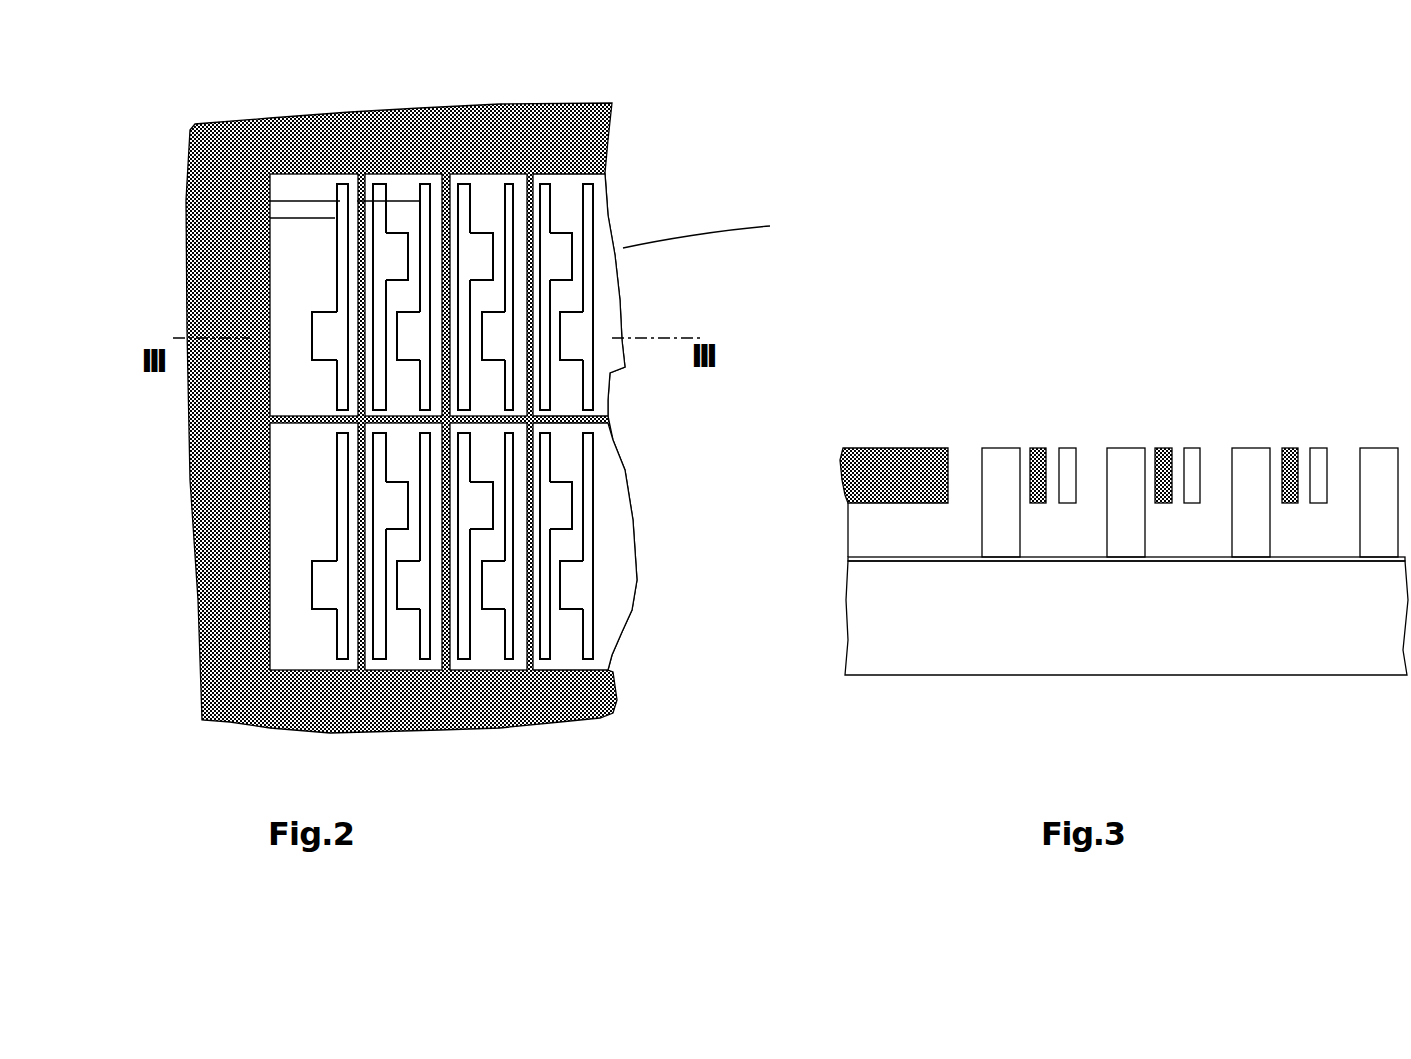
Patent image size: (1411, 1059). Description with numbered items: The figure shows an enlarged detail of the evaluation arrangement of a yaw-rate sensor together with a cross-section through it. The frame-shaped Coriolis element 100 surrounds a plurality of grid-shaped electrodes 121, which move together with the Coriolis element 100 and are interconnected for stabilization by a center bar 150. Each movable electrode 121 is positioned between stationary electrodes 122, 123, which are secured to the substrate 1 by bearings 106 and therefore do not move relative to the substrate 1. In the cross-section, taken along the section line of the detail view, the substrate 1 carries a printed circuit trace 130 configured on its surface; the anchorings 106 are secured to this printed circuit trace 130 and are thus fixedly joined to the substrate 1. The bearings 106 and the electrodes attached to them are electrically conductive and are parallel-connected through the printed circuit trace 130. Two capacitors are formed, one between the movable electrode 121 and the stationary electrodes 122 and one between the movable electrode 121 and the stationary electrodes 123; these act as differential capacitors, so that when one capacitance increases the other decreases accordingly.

In FIG. 3, the substrate 1 is at (1138, 655).
In FIG. 2, the Coriolis element 100 is at (217, 583).
In FIG. 3, the Coriolis element 100 is at (876, 470).
In FIG. 2, the bearings 106 is at (562, 257).
In FIG. 3, the bearings 106 is at (995, 463).
In FIG. 2, the grid-shaped electrodes 121 is at (535, 228).
In FIG. 3, the grid-shaped electrodes 121 is at (1038, 458).
In FIG. 2, the stationary electrodes 122 is at (270, 201).
In FIG. 2, the stationary electrodes 123 is at (462, 198).
In FIG. 3, the stationary electrodes 123 is at (1068, 455).
In FIG. 3, the printed circuit trace 130 is at (1192, 560).
In FIG. 2, the center bar 150 is at (575, 421).